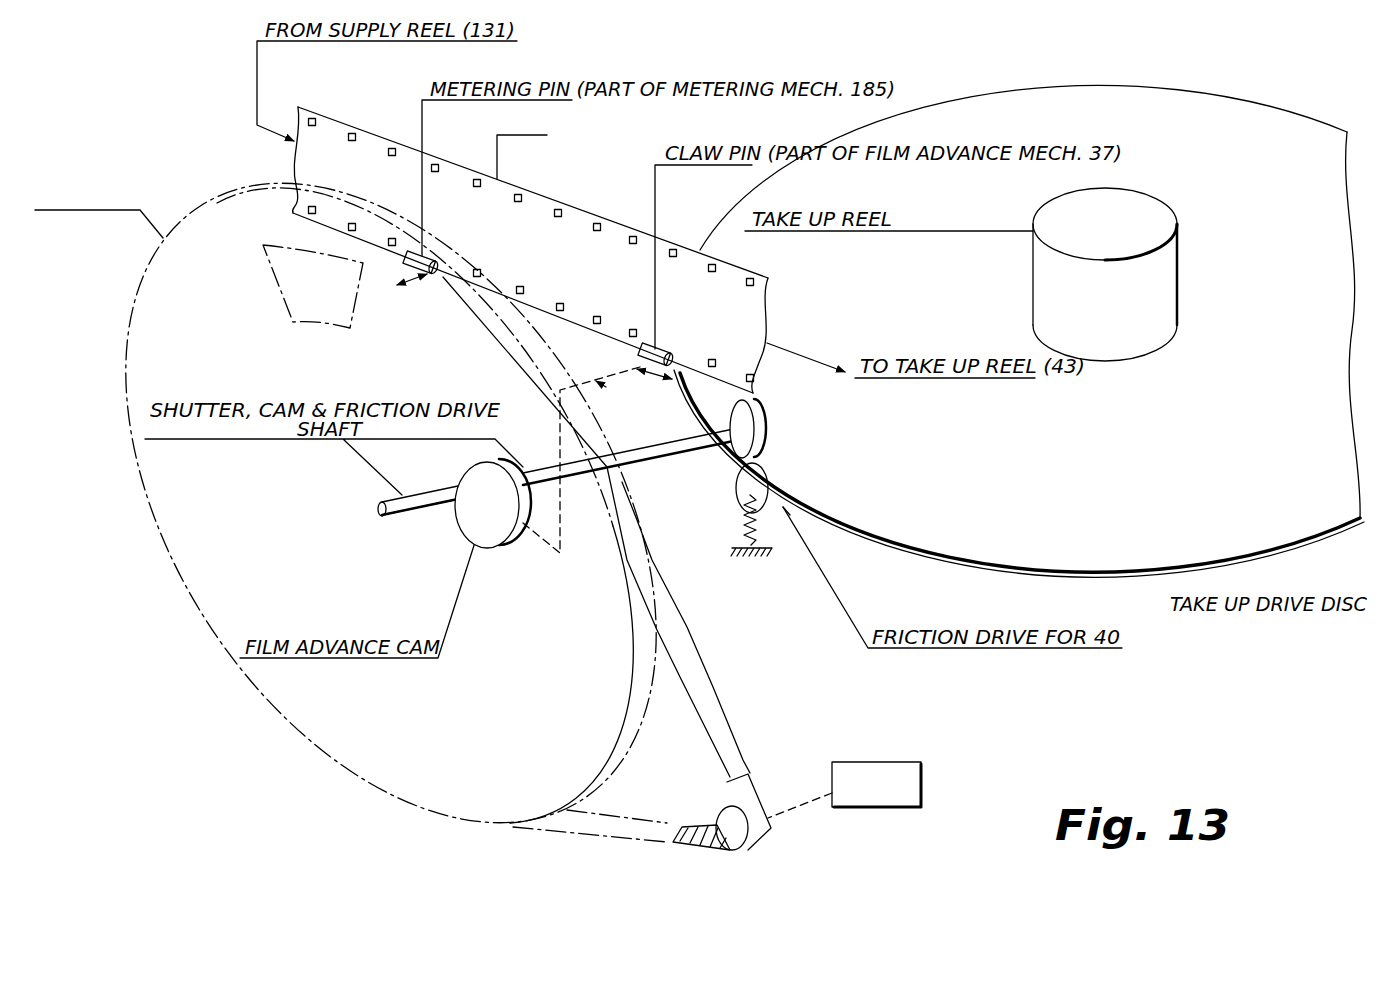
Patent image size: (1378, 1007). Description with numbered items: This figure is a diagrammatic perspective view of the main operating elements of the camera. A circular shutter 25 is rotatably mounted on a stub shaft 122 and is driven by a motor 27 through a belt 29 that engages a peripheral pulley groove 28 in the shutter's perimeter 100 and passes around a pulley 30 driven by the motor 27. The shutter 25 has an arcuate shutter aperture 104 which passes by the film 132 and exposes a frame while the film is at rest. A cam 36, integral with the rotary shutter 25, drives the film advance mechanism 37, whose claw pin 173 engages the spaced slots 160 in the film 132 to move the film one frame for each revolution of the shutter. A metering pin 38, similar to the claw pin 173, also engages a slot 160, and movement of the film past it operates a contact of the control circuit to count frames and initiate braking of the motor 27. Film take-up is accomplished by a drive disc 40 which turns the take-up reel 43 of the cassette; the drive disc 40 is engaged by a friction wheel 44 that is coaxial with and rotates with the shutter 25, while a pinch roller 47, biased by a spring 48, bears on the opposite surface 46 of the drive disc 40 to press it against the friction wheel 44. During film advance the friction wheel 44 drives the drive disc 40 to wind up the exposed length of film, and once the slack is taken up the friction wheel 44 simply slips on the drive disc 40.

The perimeter 100 is at (313, 753).
The shutter aperture 104 is at (280, 292).
The circular shutter 25 is at (396, 802).
The peripheral pulley groove 28 is at (630, 720).
The film 132 is at (543, 207).
The slots 160 is at (524, 289).
The metering pin 38 is at (405, 268).
The claw pin 173 is at (655, 348).
The film advance mechanism 37 is at (605, 393).
The belt 29 is at (722, 712).
The pulley 30 is at (738, 840).
The motor 27 is at (856, 811).
The stub shaft 122 is at (637, 458).
The cam 36 is at (473, 523).
The friction wheel 44 is at (767, 432).
The pinch roller 47 is at (747, 477).
The spring 48 is at (742, 530).
The opposite surface 46 is at (832, 528).
The drive disc 40 is at (1167, 552).
The take-up reel 43 is at (1170, 292).